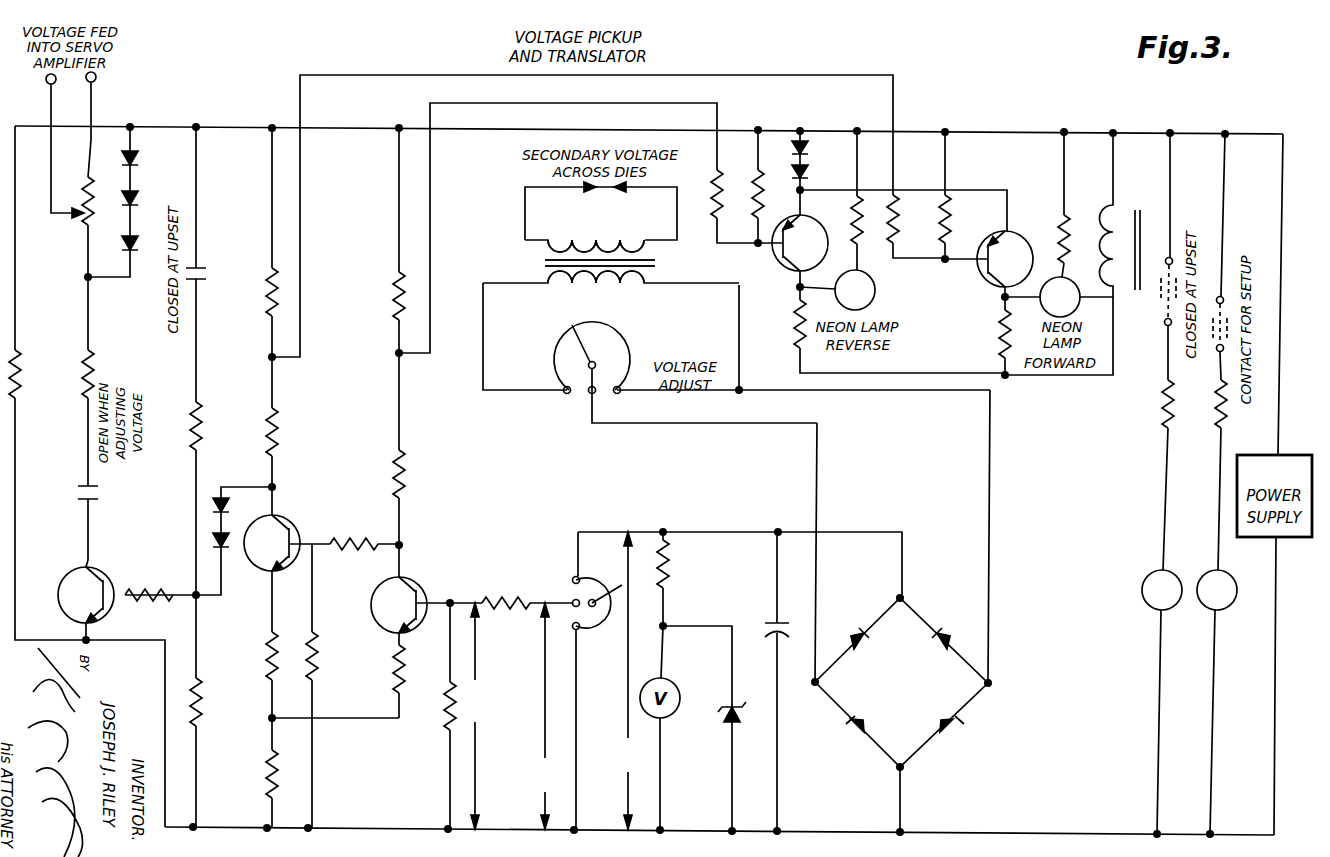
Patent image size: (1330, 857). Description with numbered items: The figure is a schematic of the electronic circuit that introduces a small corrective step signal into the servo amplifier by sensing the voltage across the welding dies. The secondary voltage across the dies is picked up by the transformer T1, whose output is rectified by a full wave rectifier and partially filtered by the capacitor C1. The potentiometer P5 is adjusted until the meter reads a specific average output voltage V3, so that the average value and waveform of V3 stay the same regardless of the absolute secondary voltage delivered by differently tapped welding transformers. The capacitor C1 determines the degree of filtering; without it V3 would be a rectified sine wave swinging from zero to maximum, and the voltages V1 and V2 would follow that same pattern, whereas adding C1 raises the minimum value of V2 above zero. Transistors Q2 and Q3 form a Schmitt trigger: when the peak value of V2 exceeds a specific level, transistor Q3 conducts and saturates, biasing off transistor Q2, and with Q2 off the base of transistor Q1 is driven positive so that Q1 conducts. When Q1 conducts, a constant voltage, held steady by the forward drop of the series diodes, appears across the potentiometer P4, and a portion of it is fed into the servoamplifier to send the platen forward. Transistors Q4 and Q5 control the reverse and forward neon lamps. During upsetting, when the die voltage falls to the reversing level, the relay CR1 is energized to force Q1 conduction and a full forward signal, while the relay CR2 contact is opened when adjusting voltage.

The potentiometer P4 is at (74, 206).
The relay CR1 is at (684, 438).
The relay CR2 (contact open when adjusting voltage and coil) CR2 is at (657, 547).
The transistor Q1 is at (106, 582).
The transistor Q2 is at (291, 529).
The transistor Q3 is at (421, 590).
The transistor Q4 is at (830, 216).
The transistor Q5 is at (1040, 228).
The transformer T1 is at (617, 261).
The potentiometer P5 is at (618, 355).
The capacitor C1 is at (786, 683).
The voltage V1 is at (545, 716).
The voltage V2 is at (475, 716).
The output voltage V3 is at (628, 680).